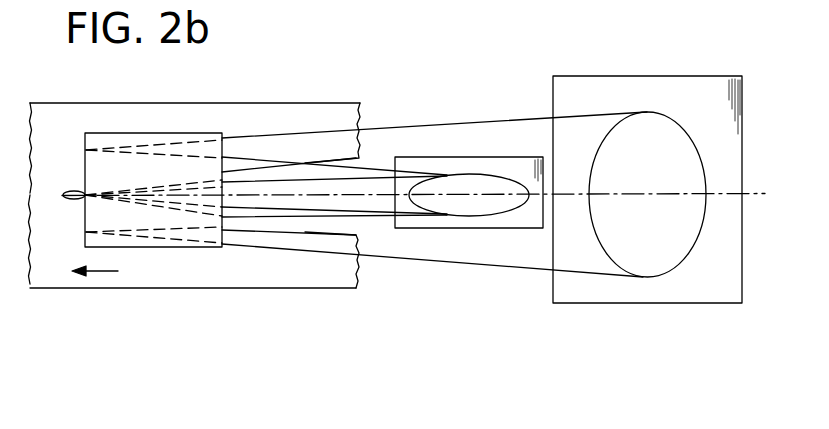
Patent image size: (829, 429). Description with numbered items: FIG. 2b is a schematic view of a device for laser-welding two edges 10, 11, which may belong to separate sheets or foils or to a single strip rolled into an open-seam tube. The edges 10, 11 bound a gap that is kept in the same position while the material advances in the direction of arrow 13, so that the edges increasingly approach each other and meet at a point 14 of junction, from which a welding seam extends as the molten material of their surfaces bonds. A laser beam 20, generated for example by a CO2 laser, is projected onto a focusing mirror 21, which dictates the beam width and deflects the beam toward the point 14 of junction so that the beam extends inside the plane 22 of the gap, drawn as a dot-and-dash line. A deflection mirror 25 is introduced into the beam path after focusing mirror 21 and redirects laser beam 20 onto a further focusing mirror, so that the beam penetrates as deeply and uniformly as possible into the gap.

The edge 10 is at (331, 110).
The edge 11 is at (310, 280).
The arrow 13 is at (105, 273).
The point of junction 14 is at (66, 198).
The laser beam 20 is at (402, 260).
The focusing mirror 21 is at (597, 64).
The plane of the gap 22 is at (272, 200).
The deflection mirror 25 is at (165, 248).